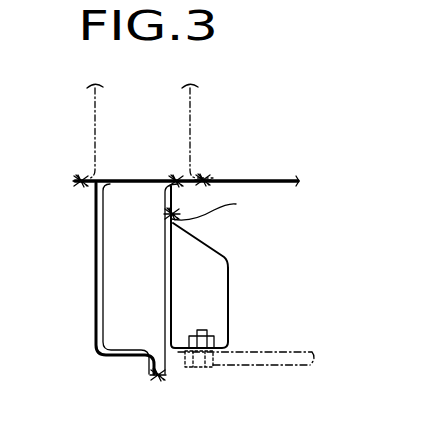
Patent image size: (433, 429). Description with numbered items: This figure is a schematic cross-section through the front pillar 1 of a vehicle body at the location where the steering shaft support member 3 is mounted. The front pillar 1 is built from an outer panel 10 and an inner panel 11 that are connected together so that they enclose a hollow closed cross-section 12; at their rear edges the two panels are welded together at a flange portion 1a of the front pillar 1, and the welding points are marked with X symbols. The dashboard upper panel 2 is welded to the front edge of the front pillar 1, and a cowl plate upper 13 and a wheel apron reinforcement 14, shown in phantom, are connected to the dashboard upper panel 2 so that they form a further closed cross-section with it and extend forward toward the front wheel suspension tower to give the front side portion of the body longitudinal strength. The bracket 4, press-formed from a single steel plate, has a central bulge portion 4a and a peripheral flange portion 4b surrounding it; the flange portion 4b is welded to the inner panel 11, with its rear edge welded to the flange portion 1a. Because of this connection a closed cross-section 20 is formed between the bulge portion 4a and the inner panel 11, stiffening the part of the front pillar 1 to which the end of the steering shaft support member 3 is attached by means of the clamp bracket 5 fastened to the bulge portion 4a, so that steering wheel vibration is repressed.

The front pillar 1 is at (137, 278).
The flange portion 1a is at (151, 379).
The dashboard upper panel 2 is at (262, 181).
The steering shaft support member 3 is at (276, 348).
The bracket 4 is at (246, 233).
The bulge portion 4a is at (229, 245).
The flange portion 4b is at (236, 204).
The clamp bracket 5 is at (194, 368).
The outer panel 10 is at (103, 251).
The inner panel 11 is at (165, 251).
The closed cross-section 12 is at (147, 240).
The cowl plate upper 13 is at (203, 113).
The wheel apron reinforcement 14 is at (90, 117).
The closed cross-section 20 is at (211, 298).